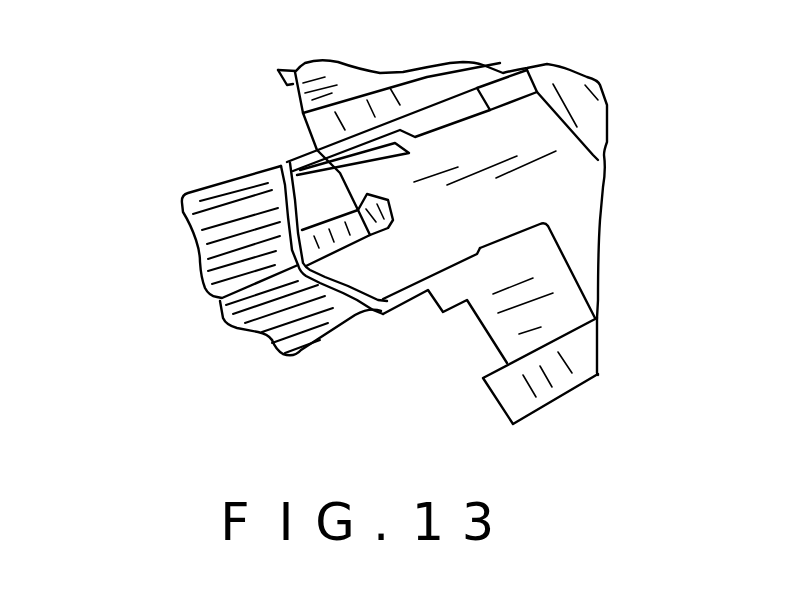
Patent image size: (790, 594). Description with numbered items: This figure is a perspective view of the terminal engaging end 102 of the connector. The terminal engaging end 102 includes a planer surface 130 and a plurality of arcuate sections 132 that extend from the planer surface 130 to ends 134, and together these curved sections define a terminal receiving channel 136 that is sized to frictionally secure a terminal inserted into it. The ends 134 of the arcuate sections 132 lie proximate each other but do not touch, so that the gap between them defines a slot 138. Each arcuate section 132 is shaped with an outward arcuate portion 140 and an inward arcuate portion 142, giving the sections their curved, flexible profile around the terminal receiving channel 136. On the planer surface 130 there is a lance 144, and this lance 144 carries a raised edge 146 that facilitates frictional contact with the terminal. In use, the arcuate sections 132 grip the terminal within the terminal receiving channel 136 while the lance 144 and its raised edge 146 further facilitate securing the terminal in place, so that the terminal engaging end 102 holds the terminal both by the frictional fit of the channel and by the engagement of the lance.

The terminal engaging end 102 is at (173, 241).
The planer surface 130 is at (557, 197).
The arcuate section 132 is at (270, 334).
The end 134 is at (208, 293).
The terminal receiving channel 136 is at (618, 148).
The slot 138 is at (191, 335).
The outward arcuate portion 140 is at (385, 313).
The inward arcuate portion 142 is at (285, 200).
The lance 144 is at (320, 158).
The raised edge 146 is at (395, 225).